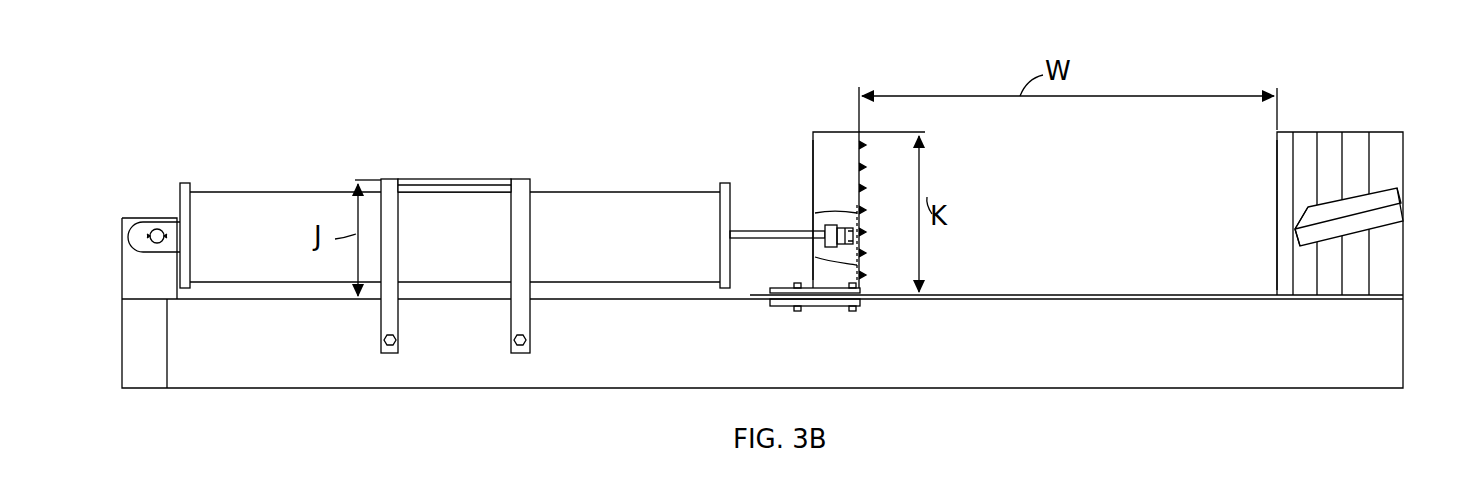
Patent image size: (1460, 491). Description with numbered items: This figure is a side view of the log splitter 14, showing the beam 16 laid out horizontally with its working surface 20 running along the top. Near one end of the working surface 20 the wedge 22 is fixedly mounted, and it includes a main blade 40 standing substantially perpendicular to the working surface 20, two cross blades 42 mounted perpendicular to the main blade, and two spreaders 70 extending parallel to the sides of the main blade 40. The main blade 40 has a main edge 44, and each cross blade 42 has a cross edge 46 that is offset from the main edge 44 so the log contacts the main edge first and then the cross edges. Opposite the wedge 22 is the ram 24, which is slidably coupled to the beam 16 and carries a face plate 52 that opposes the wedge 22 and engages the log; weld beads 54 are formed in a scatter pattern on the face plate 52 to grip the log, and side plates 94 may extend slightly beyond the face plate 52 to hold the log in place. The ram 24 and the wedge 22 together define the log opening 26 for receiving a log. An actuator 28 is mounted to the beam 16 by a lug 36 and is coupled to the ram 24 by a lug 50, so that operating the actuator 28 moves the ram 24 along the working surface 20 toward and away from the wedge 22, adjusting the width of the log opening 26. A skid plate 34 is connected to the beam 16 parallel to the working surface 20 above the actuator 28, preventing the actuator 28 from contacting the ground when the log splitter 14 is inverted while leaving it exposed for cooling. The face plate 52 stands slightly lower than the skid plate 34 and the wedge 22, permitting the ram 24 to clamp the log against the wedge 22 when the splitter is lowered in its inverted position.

The log splitter 14 is at (441, 411).
The beam 16 is at (632, 297).
The working surface 20 is at (1058, 295).
The wedge 22 is at (1349, 92).
The ram 24 is at (811, 123).
The log opening 26 is at (1169, 176).
The actuator 28 is at (662, 200).
The skid plate 34 is at (432, 178).
The lug 36 is at (147, 218).
The main blade 40 is at (1303, 132).
The cross blade 42 is at (1385, 197).
The main edge 44 is at (1277, 156).
The cross edge 46 is at (1300, 211).
The lug 50 is at (850, 229).
The face plate 52 is at (860, 241).
The weld beads 54 is at (860, 194).
The spreaders 70 is at (1360, 147).
The side plates 94 is at (830, 170).